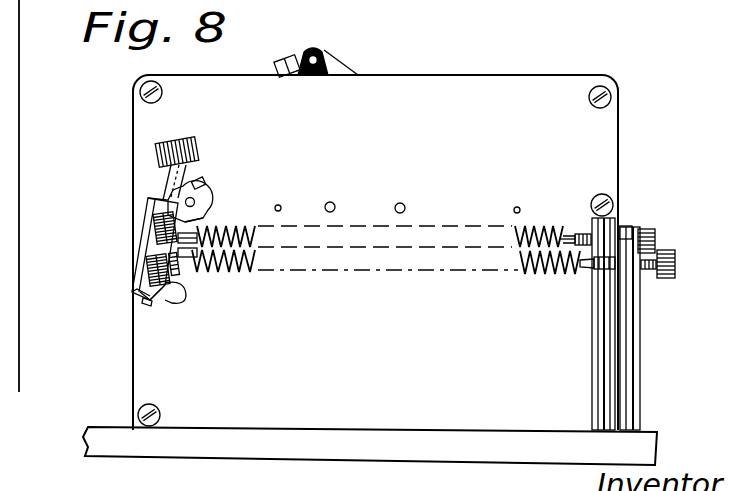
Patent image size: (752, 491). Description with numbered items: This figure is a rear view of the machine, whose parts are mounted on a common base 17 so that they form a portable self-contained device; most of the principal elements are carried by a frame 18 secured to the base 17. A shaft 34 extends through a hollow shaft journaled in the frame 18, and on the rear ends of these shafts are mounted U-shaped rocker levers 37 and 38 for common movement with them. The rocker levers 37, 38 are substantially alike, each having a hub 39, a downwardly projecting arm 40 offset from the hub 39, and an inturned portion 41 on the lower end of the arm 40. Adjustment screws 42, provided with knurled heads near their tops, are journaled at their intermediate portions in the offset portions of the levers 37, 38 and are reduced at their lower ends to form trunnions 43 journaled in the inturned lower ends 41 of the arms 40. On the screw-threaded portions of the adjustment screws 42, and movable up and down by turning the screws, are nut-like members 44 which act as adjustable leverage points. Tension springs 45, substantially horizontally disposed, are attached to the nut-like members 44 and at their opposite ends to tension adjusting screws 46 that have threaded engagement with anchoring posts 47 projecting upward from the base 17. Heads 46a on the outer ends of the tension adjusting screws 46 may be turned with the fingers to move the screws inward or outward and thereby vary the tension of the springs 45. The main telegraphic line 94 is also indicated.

The base 17 is at (282, 450).
The frame 18 is at (375, 239).
The shaft 34 is at (218, 187).
The rocker lever 37 is at (147, 194).
The rocker lever 38 is at (138, 228).
The hub 39 is at (200, 202).
The arm 40 is at (145, 259).
The inturned portion 41 is at (166, 300).
The adjustment screw 42 is at (187, 174).
The trunnion 43 is at (148, 306).
The nut-like member 44 is at (186, 230).
The tension spring 45 is at (295, 222).
The tension adjusting screw 46 is at (576, 233).
The head 46a is at (668, 249).
The anchoring post 47 is at (622, 335).
The main telegraphic line 94 is at (22, 109).